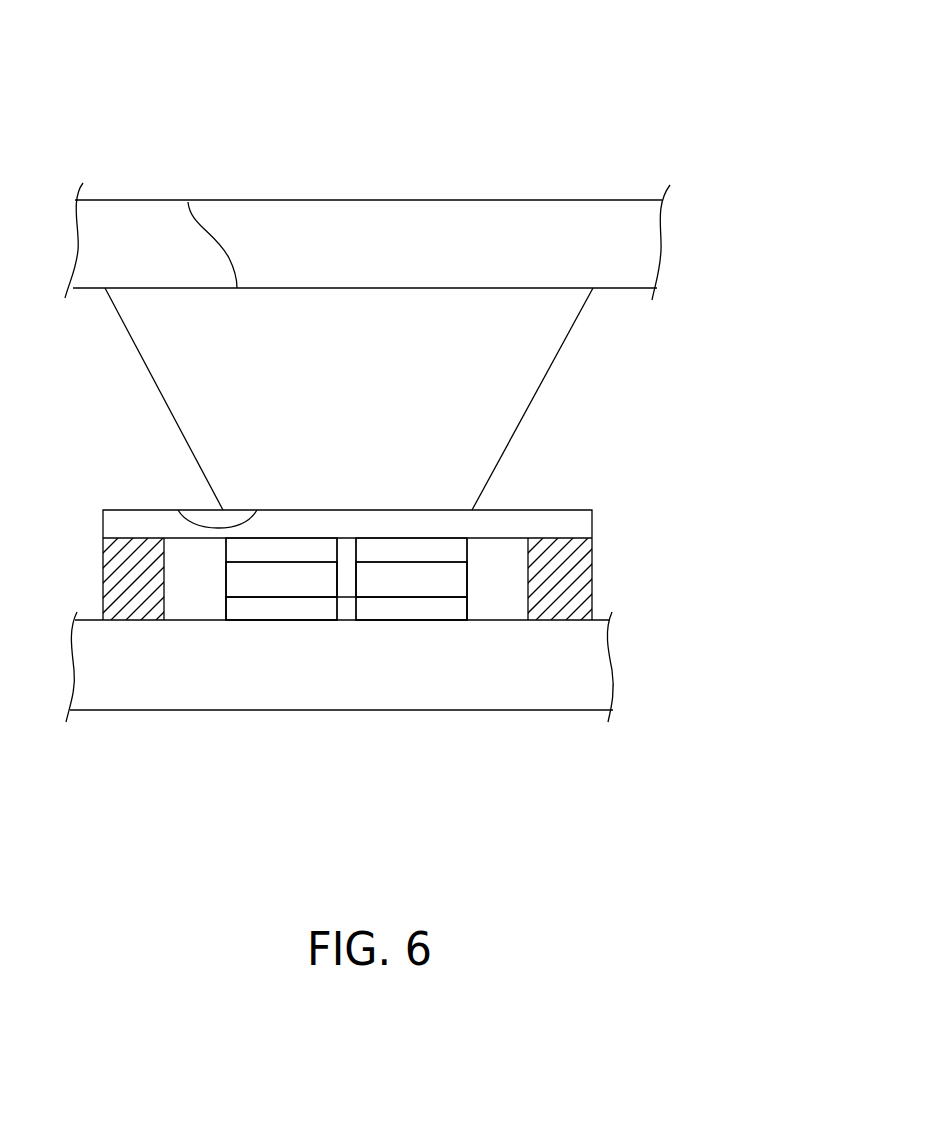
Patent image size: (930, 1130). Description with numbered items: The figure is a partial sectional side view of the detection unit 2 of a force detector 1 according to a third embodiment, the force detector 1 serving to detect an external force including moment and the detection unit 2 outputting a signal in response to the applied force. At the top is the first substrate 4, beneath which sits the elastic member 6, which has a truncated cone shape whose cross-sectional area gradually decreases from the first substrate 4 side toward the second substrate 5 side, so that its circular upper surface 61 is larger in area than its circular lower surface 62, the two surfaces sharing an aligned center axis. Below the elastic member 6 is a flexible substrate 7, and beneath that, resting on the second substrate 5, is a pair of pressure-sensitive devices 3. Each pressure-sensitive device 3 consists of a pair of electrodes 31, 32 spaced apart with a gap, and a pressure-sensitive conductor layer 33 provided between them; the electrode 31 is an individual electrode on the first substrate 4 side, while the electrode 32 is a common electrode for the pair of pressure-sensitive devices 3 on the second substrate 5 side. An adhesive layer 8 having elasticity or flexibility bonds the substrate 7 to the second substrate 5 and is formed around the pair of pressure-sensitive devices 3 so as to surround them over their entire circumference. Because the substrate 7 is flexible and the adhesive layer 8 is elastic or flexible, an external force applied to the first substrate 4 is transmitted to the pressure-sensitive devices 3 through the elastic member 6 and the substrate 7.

The force detector 1 is at (649, 116).
The detection unit 2 is at (557, 173).
The pressure-sensitive device 3 is at (167, 762).
The electrode 31 is at (268, 550).
The electrode 32 is at (307, 610).
The pressure-sensitive conductor layer 33 is at (280, 582).
The first substrate 4 is at (628, 243).
The second substrate 5 is at (575, 660).
The elastic member 6 is at (500, 383).
The upper surface 61 is at (188, 202).
The lower surface 62 is at (182, 514).
The substrate 7 is at (572, 525).
The adhesive layer 8 is at (125, 585).